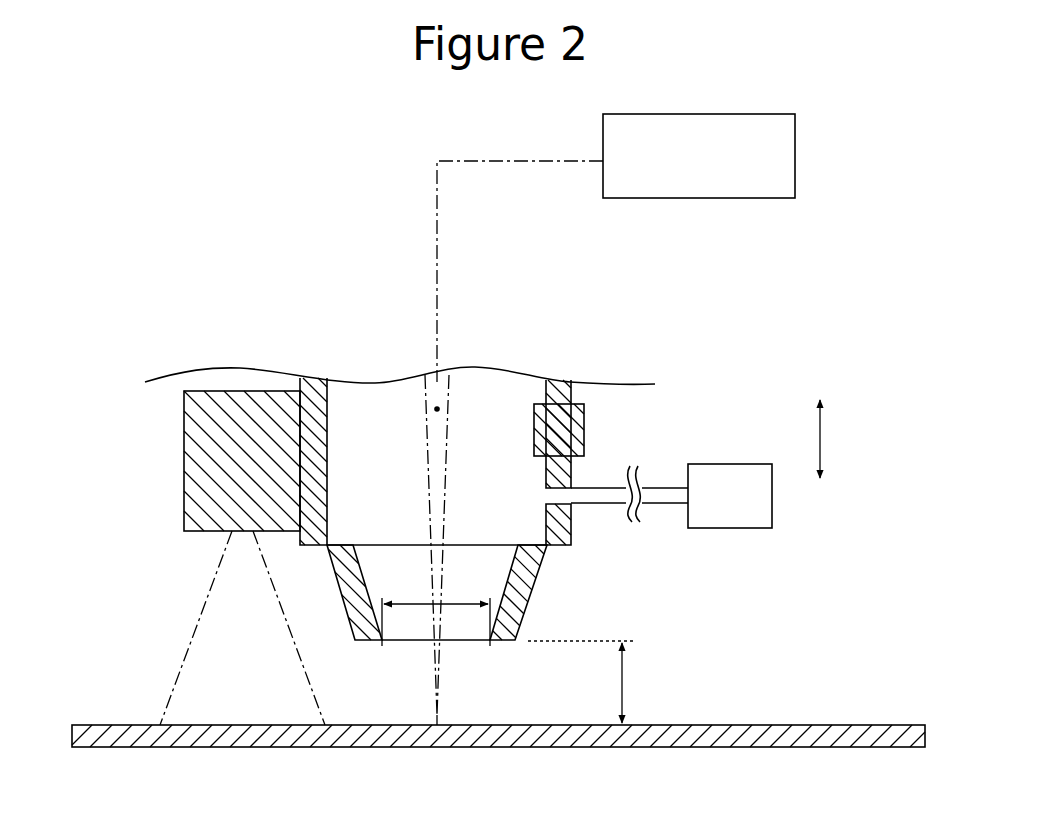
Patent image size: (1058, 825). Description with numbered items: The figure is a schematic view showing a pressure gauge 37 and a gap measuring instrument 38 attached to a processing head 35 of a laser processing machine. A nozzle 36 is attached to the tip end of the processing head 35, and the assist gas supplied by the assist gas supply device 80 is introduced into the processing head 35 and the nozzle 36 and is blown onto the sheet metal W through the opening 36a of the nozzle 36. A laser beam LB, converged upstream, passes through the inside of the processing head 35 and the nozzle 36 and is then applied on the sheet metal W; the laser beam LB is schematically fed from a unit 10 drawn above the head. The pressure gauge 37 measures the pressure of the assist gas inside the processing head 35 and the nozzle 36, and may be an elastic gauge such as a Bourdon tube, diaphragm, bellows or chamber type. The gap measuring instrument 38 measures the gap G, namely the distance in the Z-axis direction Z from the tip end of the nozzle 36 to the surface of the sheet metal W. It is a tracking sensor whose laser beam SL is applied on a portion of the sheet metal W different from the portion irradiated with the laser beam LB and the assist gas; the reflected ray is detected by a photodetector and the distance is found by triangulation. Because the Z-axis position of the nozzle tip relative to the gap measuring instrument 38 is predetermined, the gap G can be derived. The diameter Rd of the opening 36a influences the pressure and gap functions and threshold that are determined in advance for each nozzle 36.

The laser oscillator 10 is at (797, 167).
The processing head 35 is at (343, 403).
The nozzle 36 is at (527, 602).
The opening 36a is at (467, 646).
The pressure gauge 37 is at (586, 431).
The gap measuring instrument 38 is at (183, 440).
The assist gas supply device 80 is at (735, 530).
The laser beam LB is at (440, 409).
The laser beam SL is at (195, 626).
The diameter Rd is at (448, 600).
The gap G is at (624, 684).
The sheet metal W is at (862, 724).
The Z-axis direction Z is at (832, 439).